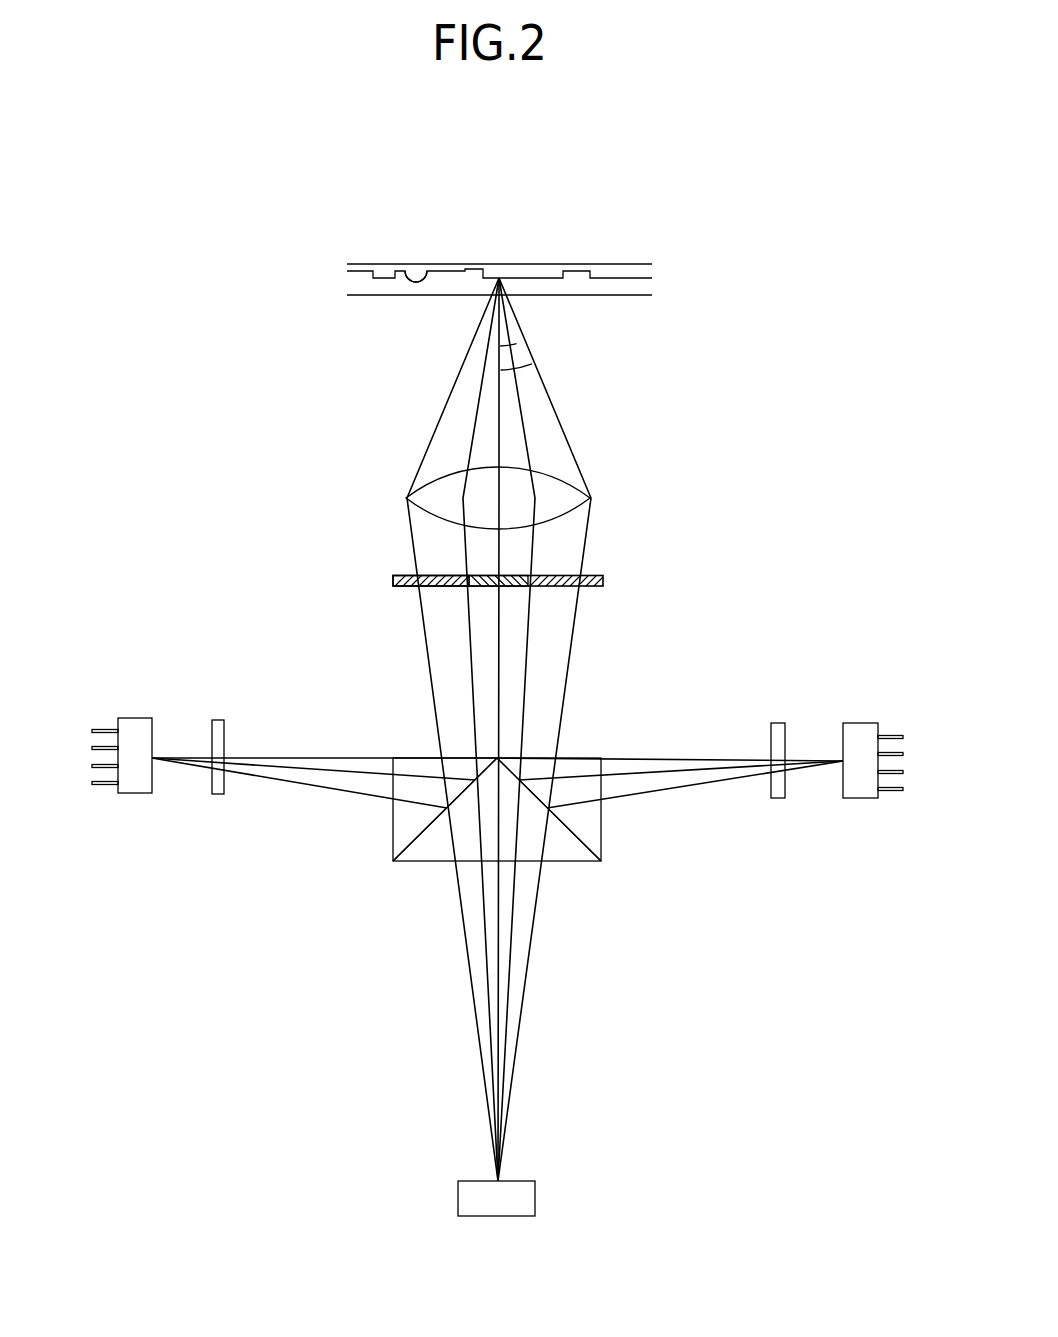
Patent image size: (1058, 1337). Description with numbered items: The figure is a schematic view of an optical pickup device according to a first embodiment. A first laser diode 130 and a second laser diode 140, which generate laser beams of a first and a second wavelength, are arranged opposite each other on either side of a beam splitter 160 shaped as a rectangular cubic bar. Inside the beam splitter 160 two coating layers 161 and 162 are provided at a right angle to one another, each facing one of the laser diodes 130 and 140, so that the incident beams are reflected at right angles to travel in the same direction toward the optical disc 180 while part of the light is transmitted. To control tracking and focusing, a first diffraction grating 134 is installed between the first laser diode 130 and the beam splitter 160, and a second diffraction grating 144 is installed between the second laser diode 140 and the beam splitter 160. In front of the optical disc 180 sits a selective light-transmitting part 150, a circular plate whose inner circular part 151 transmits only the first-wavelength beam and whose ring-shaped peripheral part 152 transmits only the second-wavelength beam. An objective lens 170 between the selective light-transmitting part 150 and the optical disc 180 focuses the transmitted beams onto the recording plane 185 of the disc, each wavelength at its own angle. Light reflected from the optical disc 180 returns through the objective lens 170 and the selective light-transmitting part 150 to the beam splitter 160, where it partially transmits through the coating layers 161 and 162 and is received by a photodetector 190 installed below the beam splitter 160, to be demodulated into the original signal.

The first laser diode 130 is at (137, 787).
The first diffraction grating 134 is at (218, 722).
The second laser diode 140 is at (868, 737).
The second diffraction grating 144 is at (778, 722).
The selective light-transmitting part 150 is at (615, 568).
The inner circular part 151 is at (492, 580).
The peripheral part 152 is at (405, 588).
The beam splitter 160 is at (588, 742).
The first coating layer 161 is at (423, 841).
The second coating layer 162 is at (571, 841).
The objective lens 170 is at (440, 493).
The optical disc 180 is at (358, 278).
The recording plane 185 is at (431, 277).
The photodetector 190 is at (470, 1198).